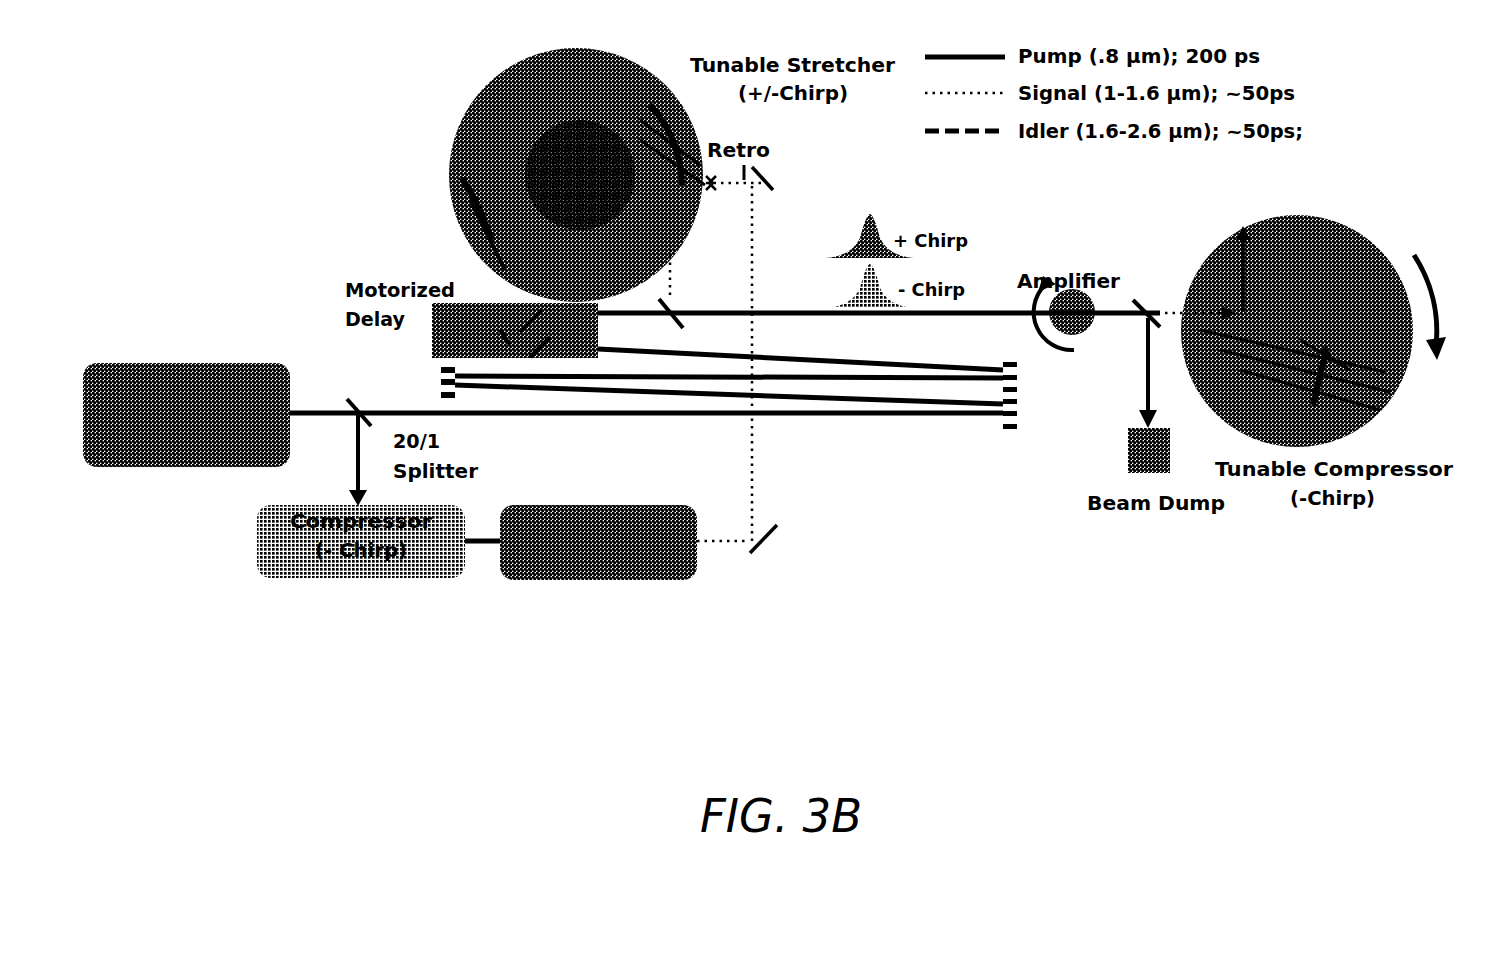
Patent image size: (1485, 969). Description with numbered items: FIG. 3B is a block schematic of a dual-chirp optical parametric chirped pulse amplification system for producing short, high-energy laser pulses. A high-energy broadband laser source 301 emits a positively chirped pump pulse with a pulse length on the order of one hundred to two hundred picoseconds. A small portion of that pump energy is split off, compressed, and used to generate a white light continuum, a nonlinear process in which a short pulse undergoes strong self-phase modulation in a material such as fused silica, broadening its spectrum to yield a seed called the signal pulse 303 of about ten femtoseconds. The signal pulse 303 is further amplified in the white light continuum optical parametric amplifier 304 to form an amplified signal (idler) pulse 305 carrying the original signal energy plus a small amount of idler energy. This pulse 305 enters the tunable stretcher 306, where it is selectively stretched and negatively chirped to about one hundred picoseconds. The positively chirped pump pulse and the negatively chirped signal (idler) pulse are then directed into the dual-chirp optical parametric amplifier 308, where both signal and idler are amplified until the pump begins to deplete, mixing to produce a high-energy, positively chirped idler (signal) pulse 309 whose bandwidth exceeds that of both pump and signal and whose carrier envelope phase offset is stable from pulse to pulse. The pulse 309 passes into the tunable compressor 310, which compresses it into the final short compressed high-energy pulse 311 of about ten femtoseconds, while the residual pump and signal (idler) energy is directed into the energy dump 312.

The high-energy broadband laser source 301 is at (186, 398).
The signal pulse 303 is at (646, 452).
The white light continuum optical parametric amplifier 304 is at (598, 557).
The amplified signal (idler) pulse 305 is at (726, 359).
The tunable stretcher 306 is at (577, 159).
The dual-chirp optical parametric amplifier 308 is at (1064, 300).
The idler (signal) pulse 309 is at (1295, 352).
The tunable compressor 310 is at (1313, 377).
The compressed high-energy pulse 311 is at (1259, 269).
The energy dump 312 is at (1149, 431).